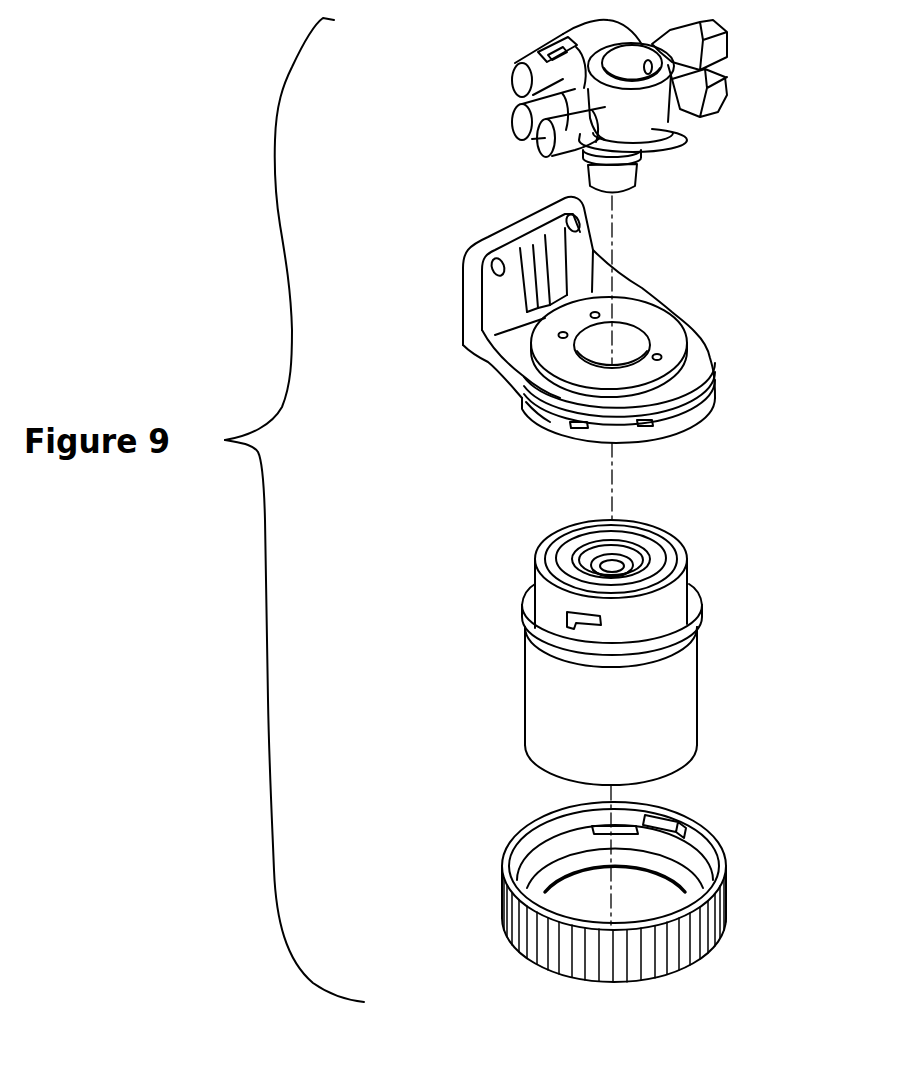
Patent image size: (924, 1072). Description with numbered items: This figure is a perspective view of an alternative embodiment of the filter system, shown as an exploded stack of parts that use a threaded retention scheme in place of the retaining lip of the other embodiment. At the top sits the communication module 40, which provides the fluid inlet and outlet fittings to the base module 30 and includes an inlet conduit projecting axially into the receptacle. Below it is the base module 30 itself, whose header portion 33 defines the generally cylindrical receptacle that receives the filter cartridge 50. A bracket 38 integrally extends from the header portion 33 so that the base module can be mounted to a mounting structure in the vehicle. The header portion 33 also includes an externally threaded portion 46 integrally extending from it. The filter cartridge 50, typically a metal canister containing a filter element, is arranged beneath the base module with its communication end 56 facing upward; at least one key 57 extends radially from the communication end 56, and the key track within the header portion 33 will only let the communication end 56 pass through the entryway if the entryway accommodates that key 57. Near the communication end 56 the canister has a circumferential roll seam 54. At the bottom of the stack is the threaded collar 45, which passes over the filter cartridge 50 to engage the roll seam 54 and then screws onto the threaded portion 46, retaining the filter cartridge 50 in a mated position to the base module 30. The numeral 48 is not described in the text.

The base module 30 is at (703, 323).
The header portion 33 is at (652, 386).
The bracket 38 is at (483, 243).
The communication module 40 is at (657, 150).
The threaded collar 45 is at (726, 889).
The externally threaded portion 46 is at (552, 423).
The center outlet fitting 48 is at (600, 562).
The filter cartridge 50 is at (698, 685).
The circumferential roll seam 54 is at (703, 623).
The communication end 56 is at (533, 586).
The key 57 is at (570, 633).